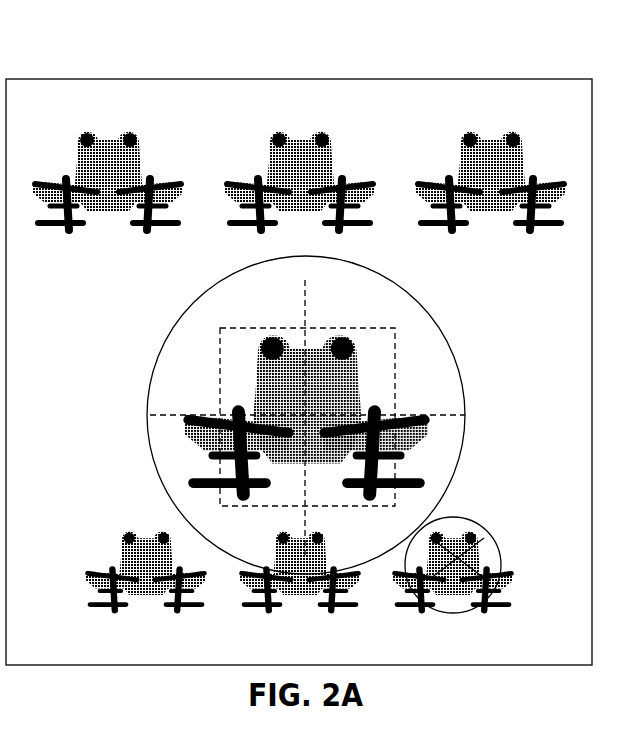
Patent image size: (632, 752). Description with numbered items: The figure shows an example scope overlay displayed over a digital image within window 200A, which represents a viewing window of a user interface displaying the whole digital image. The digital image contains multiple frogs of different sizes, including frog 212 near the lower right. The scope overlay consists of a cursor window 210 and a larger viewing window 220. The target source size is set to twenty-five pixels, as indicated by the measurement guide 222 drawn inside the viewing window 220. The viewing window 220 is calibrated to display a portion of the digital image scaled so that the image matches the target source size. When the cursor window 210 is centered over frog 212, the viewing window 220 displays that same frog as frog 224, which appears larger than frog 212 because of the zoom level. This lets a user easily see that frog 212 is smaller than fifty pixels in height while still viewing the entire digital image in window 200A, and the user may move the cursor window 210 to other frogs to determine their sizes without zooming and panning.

The window 200A is at (459, 79).
The viewing window 220 is at (432, 311).
The measurement guide 222 is at (303, 328).
The frog 224 is at (248, 414).
The cursor window 210 is at (486, 526).
The frog 212 is at (488, 560).